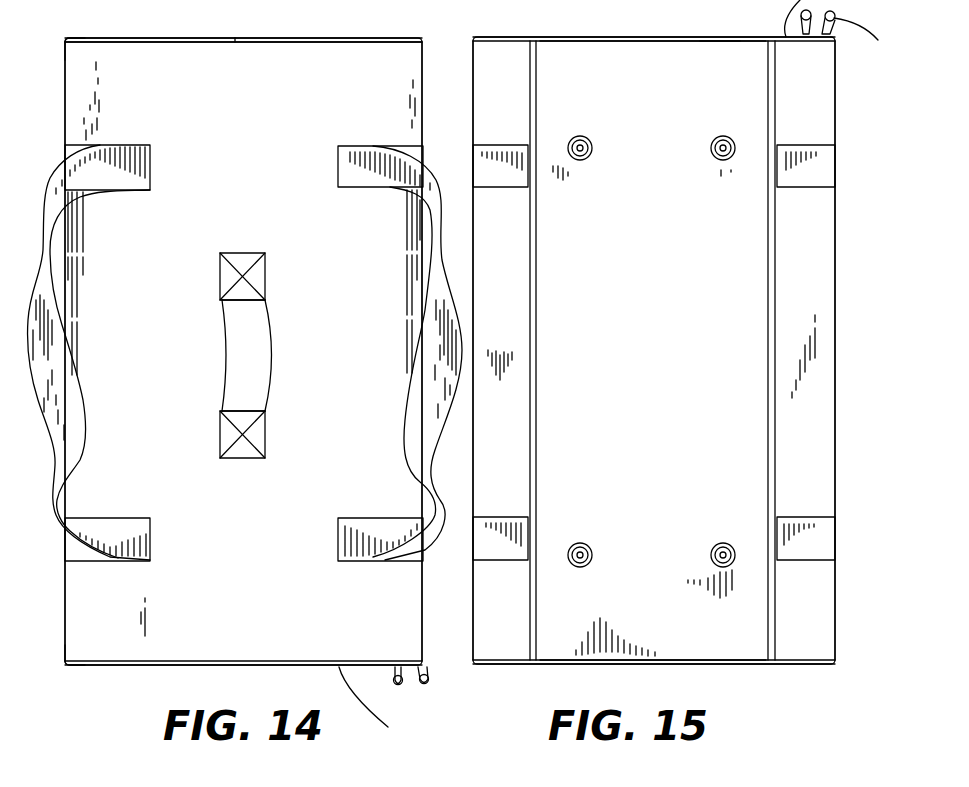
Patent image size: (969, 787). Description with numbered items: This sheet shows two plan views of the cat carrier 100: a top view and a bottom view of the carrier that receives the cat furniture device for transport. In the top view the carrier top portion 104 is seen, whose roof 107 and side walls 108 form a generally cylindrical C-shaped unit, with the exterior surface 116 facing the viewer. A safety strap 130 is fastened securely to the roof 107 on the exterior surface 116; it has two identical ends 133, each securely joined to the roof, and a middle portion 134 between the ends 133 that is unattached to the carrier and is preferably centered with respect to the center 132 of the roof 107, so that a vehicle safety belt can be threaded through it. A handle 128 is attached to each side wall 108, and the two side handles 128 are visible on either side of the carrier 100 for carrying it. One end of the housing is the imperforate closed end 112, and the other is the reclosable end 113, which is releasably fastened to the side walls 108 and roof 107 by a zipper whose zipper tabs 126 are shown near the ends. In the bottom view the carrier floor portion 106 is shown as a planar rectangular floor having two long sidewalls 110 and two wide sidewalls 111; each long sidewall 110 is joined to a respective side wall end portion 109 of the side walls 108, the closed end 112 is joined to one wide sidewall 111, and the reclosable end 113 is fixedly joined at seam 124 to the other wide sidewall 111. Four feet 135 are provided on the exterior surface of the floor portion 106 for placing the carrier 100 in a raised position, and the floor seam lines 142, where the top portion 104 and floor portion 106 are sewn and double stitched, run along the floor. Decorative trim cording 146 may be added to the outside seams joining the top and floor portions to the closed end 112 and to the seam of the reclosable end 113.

In FIG. 14, the cat carrier 100 is at (120, 697).
In FIG. 15, the cat carrier 100 is at (487, 697).
In FIG. 14, the carrier top portion 104 is at (385, 705).
In FIG. 14, the carrier floor portion 106 is at (243, 23).
In FIG. 15, the carrier floor portion 106 is at (665, 364).
In FIG. 14, the roof 107 is at (237, 38).
In FIG. 14, the side wall 108 is at (66, 128).
In FIG. 15, the side wall 108 is at (470, 160).
In FIG. 15, the side wall end portion 109 is at (530, 330).
In FIG. 15, the floor long sidewall 110 is at (537, 276).
In FIG. 15, the floor wide sidewall 111 is at (592, 43).
In FIG. 14, the closed end 112 is at (160, 38).
In FIG. 15, the closed end 112 is at (603, 665).
In FIG. 14, the reclosable end 113 is at (229, 665).
In FIG. 15, the reclosable end 113 is at (634, 37).
In FIG. 14, the exterior surface 116 is at (257, 529).
In FIG. 15, the seam 124 is at (702, 42).
In FIG. 14, the zipper tab 126 is at (408, 686).
In FIG. 15, the zipper tab 126 is at (838, 30).
In FIG. 14, the handle 128 is at (80, 452).
In FIG. 15, the handle 128 is at (506, 560).
In FIG. 14, the safety strap 130 is at (273, 326).
In FIG. 14, the center of the roof 132 is at (273, 374).
In FIG. 14, the safety strap end 133 is at (220, 296).
In FIG. 14, the middle portion 134 is at (228, 340).
In FIG. 14, the foot 135 is at (362, 2).
In FIG. 15, the foot 135 is at (580, 162).
In FIG. 15, the floor seam line 142 is at (537, 452).
In FIG. 14, the decorative trim cording 146 is at (66, 38).
In FIG. 15, the decorative trim cording 146 is at (802, 665).